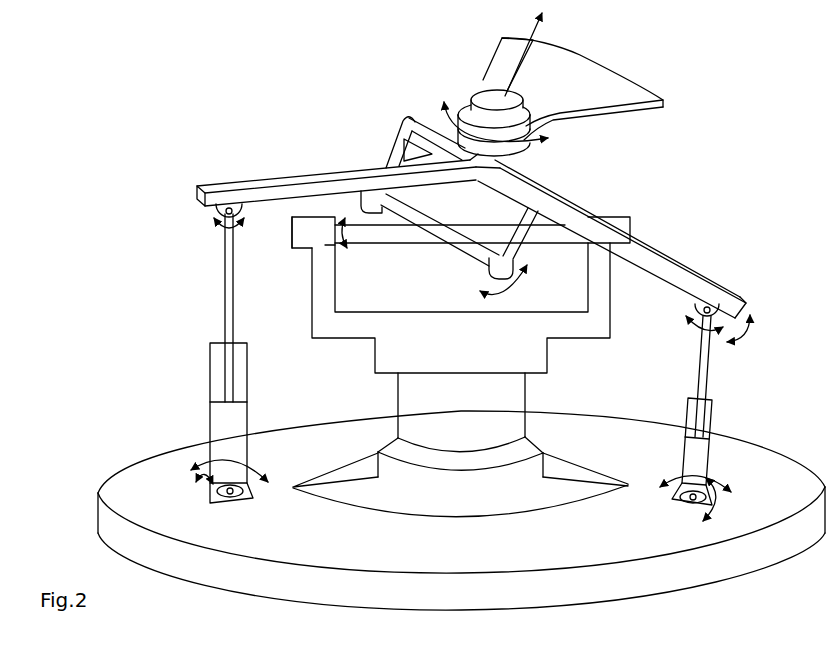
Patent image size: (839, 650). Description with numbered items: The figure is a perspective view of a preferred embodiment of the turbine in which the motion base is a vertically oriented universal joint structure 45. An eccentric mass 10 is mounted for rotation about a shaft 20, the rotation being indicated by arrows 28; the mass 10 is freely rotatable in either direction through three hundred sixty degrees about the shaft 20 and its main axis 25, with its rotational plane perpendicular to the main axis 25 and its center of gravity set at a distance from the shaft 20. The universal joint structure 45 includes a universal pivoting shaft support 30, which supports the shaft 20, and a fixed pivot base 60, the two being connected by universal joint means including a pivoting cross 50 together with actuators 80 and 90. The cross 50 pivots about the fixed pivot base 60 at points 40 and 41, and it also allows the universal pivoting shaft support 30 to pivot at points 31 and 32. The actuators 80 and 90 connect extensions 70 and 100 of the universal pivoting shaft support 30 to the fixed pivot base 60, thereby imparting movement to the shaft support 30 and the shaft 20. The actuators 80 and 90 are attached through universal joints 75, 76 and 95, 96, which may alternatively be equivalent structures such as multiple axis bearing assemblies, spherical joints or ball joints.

The eccentric mass 10 is at (603, 95).
The shaft 20 is at (487, 92).
The main axis 25 is at (541, 36).
The arrows 28 is at (531, 142).
The universal pivoting shaft support 30 is at (418, 127).
The pivot point 31 is at (370, 200).
The pivot point 32 is at (505, 259).
The pivot point 40 is at (623, 217).
The pivot point 41 is at (333, 232).
The universal joint structure 45 is at (333, 372).
The pivoting cross 50 is at (392, 244).
The fixed pivot base 60 is at (463, 443).
The extension 70 is at (710, 288).
The universal joint 75 is at (706, 316).
The universal joint 76 is at (690, 500).
The actuator 80 is at (697, 437).
The actuator 90 is at (227, 342).
The universal joint 95 is at (219, 216).
The universal joint 96 is at (227, 488).
The extension 100 is at (260, 182).